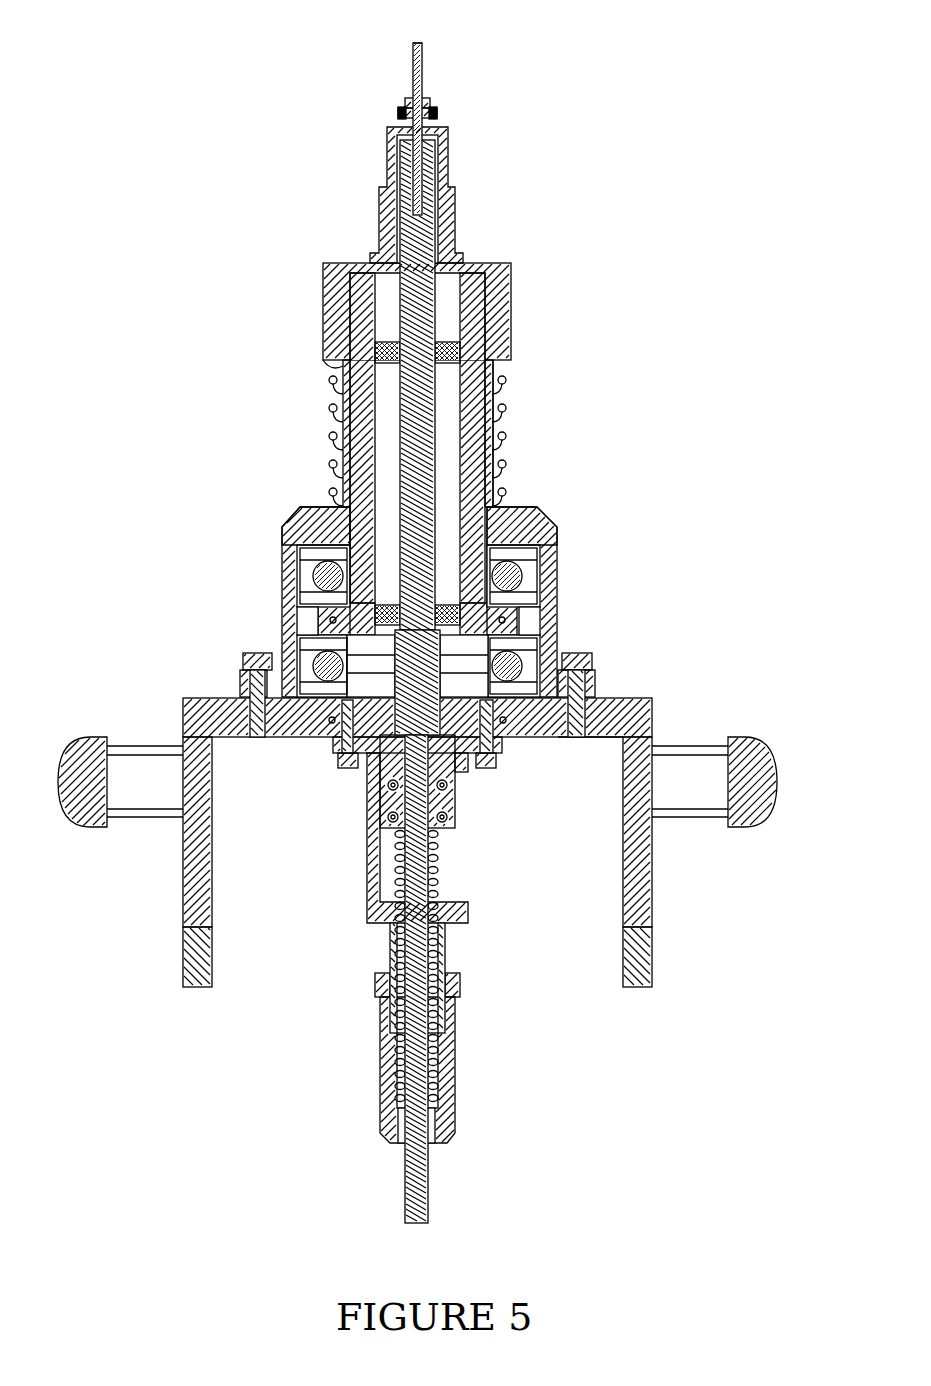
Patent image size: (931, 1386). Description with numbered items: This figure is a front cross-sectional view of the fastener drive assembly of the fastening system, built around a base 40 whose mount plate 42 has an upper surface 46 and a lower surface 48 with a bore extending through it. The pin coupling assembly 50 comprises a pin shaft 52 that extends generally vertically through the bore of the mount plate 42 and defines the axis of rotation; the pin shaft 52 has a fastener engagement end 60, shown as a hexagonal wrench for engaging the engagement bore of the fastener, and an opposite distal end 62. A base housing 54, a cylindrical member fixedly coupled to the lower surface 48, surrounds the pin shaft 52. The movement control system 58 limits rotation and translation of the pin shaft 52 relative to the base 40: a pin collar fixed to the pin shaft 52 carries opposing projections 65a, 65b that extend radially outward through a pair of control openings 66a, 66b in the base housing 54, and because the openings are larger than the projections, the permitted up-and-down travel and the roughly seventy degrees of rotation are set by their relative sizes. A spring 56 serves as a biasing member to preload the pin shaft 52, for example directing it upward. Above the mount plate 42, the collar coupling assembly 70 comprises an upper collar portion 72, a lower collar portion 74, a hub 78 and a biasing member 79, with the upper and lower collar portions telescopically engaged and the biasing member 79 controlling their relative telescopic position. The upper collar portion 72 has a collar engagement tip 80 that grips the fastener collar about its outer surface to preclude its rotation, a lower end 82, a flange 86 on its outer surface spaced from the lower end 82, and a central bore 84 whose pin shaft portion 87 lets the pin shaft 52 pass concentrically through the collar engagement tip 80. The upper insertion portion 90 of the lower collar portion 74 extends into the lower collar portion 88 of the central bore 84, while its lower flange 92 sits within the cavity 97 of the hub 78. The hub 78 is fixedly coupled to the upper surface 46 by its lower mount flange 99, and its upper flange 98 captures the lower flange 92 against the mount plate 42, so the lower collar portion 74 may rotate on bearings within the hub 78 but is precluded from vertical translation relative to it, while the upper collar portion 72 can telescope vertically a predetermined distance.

The base 40 is at (745, 718).
The mount plate 42 is at (632, 698).
The upper surface 46 is at (608, 690).
The lower surface 48 is at (590, 735).
The pin coupling assembly 50 is at (472, 1070).
The pin shaft 52 is at (422, 70).
The base housing 54 is at (365, 962).
The spring 56 is at (438, 875).
The movement control system 58 is at (370, 812).
The fastener engagement end 60 is at (440, 38).
The distal end 62 is at (405, 1195).
The opposing projection 65a is at (388, 785).
The opposing projection 65b is at (447, 785).
The control opening 66a is at (367, 870).
The control opening 66b is at (447, 817).
The collar coupling assembly 70 is at (570, 385).
The upper collar portion 72 is at (511, 290).
The lower collar portion 74 is at (373, 462).
The hub 78 is at (558, 545).
The biasing member 79 is at (505, 437).
The collar engagement tip 80 is at (445, 114).
The lower end 82 is at (530, 500).
The central bore 84 is at (472, 333).
The flange 86 is at (333, 365).
The pin shaft portion 87 is at (438, 207).
The lower collar portion of the central bore 88 is at (488, 400).
The upper insertion portion 90 is at (353, 408).
The lower flange 92 is at (320, 607).
The cavity 97 is at (520, 590).
The upper flange 98 is at (300, 521).
The lower mount flange 99 is at (243, 690).